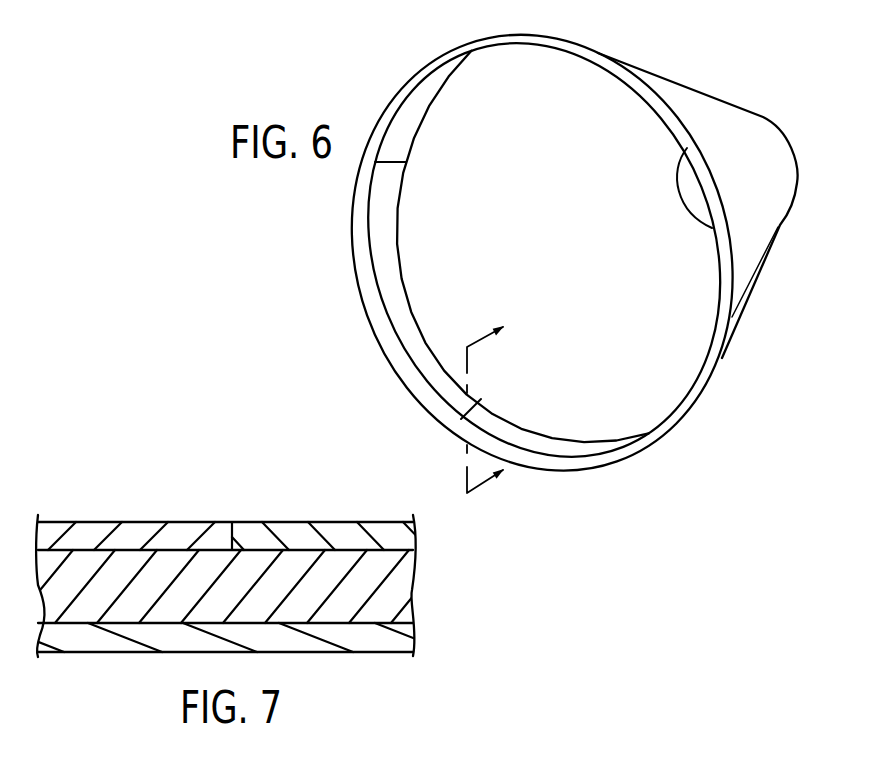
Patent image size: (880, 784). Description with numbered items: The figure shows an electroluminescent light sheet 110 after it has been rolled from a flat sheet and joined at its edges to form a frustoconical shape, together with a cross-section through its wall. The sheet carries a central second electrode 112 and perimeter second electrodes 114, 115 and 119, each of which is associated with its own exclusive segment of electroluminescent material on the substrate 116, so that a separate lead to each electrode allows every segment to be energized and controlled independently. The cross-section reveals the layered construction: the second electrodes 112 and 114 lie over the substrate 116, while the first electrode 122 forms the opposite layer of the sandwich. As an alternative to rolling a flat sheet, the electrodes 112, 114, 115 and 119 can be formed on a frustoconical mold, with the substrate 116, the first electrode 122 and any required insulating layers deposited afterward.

In FIG. 6, the electroluminescent light sheet 110 is at (330, 260).
In FIG. 6, the central second electrode 112 is at (670, 372).
In FIG. 7, the central second electrode 112 is at (297, 535).
In FIG. 6, the perimeter second electrode 114 is at (417, 347).
In FIG. 7, the perimeter second electrode 114 is at (97, 530).
In FIG. 6, the perimeter second electrode 115 is at (410, 119).
In FIG. 6, the substrate 116 is at (387, 337).
In FIG. 7, the substrate 116 is at (400, 587).
In FIG. 6, the perimeter second electrode 119 is at (574, 447).
In FIG. 6, the first electrode 122 is at (746, 127).
In FIG. 7, the first electrode 122 is at (373, 642).